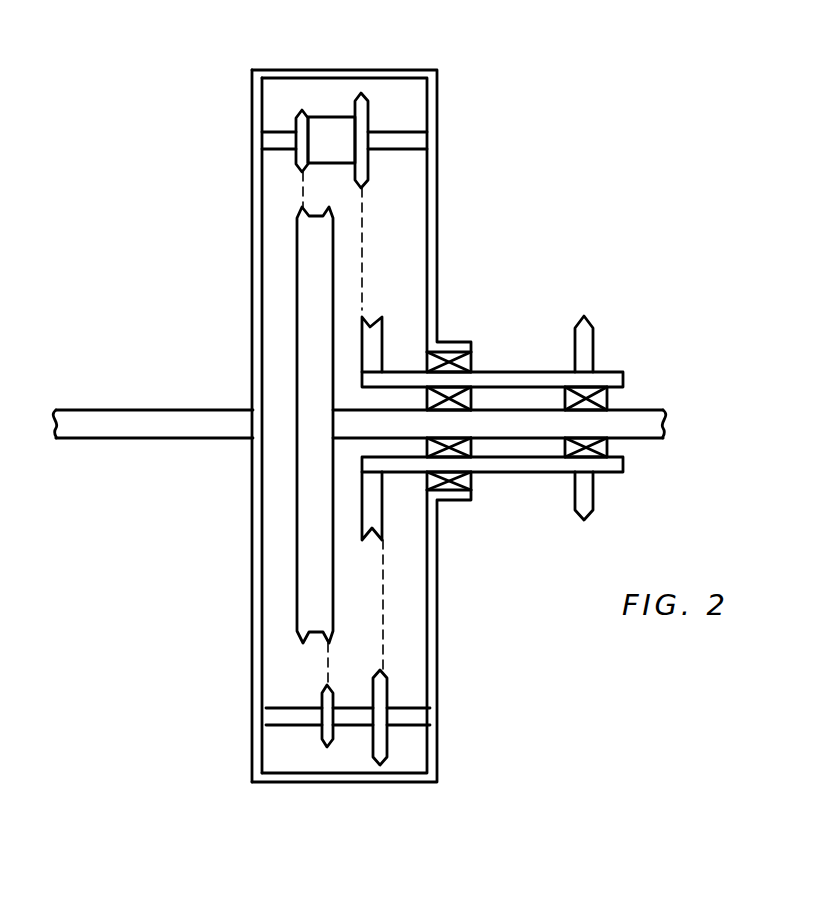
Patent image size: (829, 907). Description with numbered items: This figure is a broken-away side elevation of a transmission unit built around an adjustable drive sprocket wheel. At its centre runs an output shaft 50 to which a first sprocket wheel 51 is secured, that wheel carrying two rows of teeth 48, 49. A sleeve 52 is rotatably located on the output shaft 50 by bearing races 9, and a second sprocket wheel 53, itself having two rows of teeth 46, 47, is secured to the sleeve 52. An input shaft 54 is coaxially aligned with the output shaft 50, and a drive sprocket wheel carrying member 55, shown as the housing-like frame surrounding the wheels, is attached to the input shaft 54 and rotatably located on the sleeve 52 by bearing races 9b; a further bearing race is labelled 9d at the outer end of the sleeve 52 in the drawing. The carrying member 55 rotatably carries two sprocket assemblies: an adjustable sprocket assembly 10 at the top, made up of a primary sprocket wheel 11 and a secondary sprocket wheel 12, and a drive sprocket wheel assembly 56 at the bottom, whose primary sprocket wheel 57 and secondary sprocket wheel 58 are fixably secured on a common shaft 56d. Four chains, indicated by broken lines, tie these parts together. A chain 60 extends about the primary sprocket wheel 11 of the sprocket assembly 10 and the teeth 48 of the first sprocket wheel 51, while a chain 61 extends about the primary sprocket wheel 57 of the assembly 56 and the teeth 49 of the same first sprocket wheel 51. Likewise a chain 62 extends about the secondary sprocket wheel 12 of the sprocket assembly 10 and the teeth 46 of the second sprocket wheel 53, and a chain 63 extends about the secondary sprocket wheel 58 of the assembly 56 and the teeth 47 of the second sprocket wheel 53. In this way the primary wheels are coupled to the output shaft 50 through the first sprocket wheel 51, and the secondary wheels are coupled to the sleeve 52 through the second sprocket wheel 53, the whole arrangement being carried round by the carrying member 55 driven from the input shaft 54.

The bearing race 9 is at (437, 398).
The bearing race 9b is at (430, 363).
The bearing and sprocket on shaft 9d is at (578, 395).
The sprocket assembly 10 is at (405, 105).
The primary sprocket wheel 11 is at (303, 112).
The secondary sprocket wheel 12 is at (367, 105).
The teeth 46 is at (362, 318).
The teeth 47 is at (373, 355).
The teeth 48 is at (302, 210).
The teeth 49 is at (300, 213).
The output shaft 50 is at (642, 422).
The first sprocket wheel 51 is at (312, 268).
The sleeve 52 is at (520, 370).
The second sprocket wheel 53 is at (432, 362).
The input shaft 54 is at (117, 422).
The drive sprocket wheel carrying member 55 is at (262, 547).
The drive sprocket wheel assembly 56 is at (410, 745).
The lower spool shaft 56d is at (410, 712).
The primary sprocket wheel 57 is at (320, 738).
The secondary sprocket wheel 58 is at (385, 760).
The chain 60 is at (303, 185).
The chain 61 is at (328, 662).
The chain 62 is at (365, 230).
The chain 63 is at (382, 595).